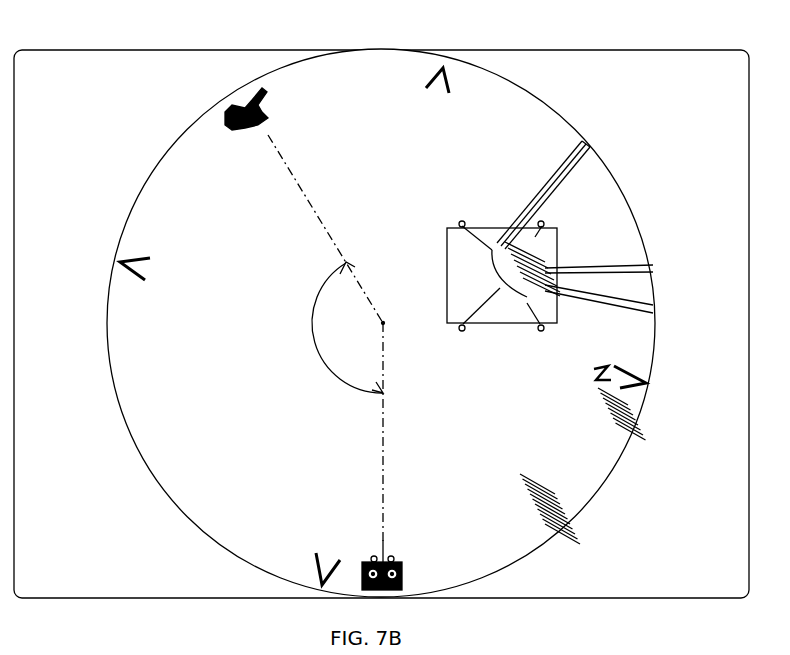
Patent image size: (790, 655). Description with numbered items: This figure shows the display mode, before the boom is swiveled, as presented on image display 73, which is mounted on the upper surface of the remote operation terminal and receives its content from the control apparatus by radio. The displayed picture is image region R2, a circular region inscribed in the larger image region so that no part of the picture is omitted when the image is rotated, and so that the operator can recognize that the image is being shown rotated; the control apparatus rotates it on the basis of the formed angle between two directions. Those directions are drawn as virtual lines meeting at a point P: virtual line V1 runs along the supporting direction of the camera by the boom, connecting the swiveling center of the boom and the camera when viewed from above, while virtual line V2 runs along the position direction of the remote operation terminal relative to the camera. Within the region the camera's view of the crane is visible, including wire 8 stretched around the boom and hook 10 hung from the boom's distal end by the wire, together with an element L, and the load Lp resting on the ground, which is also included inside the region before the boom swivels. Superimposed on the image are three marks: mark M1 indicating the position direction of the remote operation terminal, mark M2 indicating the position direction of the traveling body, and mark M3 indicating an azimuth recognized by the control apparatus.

The image display 73 is at (699, 50).
The image region R2 is at (275, 435).
The mark M3 is at (580, 373).
The mark M2 is at (250, 150).
The mark M1 is at (368, 536).
The virtual line V1 is at (312, 207).
The virtual line V2 is at (385, 470).
The reference point P is at (394, 312).
The lens unit L is at (497, 327).
The hook 10 is at (545, 247).
The wire 8 is at (558, 180).
The load Lp is at (605, 437).